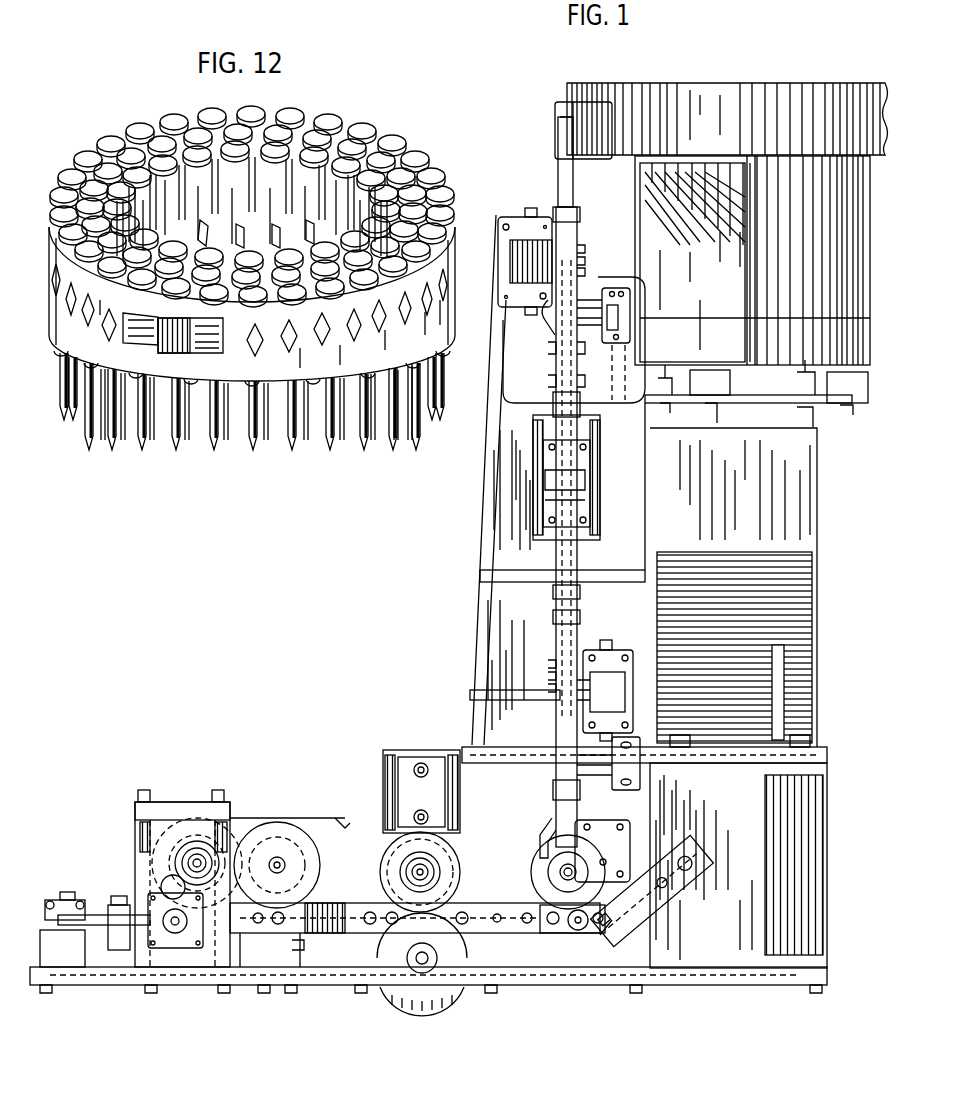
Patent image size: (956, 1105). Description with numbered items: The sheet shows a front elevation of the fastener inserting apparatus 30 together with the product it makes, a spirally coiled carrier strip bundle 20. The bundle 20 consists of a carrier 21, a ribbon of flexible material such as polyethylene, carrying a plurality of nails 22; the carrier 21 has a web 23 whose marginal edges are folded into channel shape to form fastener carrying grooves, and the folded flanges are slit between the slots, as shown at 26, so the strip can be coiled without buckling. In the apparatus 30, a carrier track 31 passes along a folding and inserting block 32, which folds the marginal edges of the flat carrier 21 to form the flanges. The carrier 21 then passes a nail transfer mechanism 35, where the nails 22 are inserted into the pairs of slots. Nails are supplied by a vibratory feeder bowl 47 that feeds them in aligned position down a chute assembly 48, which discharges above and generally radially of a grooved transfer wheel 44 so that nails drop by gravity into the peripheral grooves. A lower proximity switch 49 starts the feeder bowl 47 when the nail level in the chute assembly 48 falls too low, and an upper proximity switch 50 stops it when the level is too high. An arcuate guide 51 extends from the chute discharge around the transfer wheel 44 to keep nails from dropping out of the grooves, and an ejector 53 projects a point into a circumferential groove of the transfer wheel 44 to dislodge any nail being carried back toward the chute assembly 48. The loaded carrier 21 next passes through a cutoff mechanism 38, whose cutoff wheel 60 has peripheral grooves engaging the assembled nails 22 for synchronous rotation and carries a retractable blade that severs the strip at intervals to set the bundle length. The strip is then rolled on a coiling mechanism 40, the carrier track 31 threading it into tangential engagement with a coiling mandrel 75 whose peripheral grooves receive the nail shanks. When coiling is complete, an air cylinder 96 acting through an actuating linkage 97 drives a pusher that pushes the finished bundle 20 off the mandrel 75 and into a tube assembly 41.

In FIG. 12, the spirally coiled carrier strip bundle 20 is at (361, 88).
In FIG. 12, the carrier 21 is at (43, 276).
In FIG. 12, the nails 22 is at (112, 150).
In FIG. 12, the web 23 is at (100, 338).
In FIG. 12, the slit 26 is at (222, 418).
In FIG. 1, the fastener inserting apparatus 30 is at (804, 56).
In FIG. 1, the carrier track 31 is at (700, 860).
In FIG. 1, the folding and inserting block 32 is at (640, 892).
In FIG. 1, the nail transfer mechanism 35 is at (548, 936).
In FIG. 1, the cutoff mechanism 38 is at (385, 965).
In FIG. 1, the coiling mechanism 40 is at (245, 905).
In FIG. 1, the tube assembly 41 is at (140, 850).
In FIG. 1, the transfer wheel 44 is at (535, 846).
In FIG. 1, the feeder bowl 47 is at (697, 110).
In FIG. 1, the chute assembly 48 is at (560, 550).
In FIG. 1, the lower proximity switch 49 is at (622, 767).
In FIG. 1, the upper proximity switch 50 is at (612, 308).
In FIG. 1, the arcuate guide 51 is at (598, 838).
In FIG. 1, the ejector 53 is at (540, 808).
In FIG. 1, the cutoff wheel 60 is at (395, 850).
In FIG. 1, the coiling mandrel 75 is at (215, 850).
In FIG. 1, the air cylinder 96 is at (46, 908).
In FIG. 1, the actuating linkage 97 is at (105, 915).